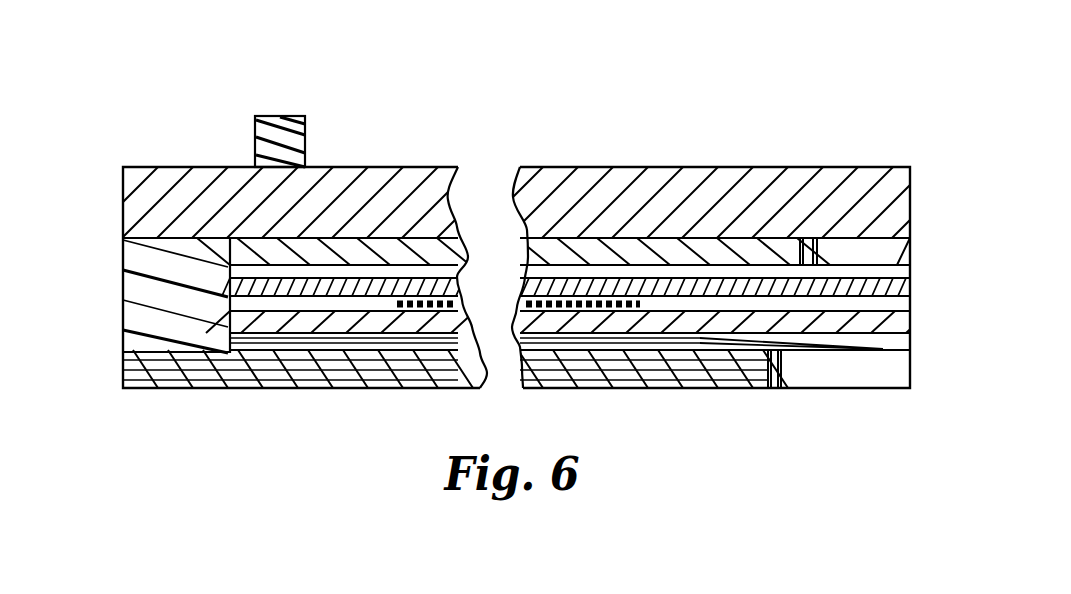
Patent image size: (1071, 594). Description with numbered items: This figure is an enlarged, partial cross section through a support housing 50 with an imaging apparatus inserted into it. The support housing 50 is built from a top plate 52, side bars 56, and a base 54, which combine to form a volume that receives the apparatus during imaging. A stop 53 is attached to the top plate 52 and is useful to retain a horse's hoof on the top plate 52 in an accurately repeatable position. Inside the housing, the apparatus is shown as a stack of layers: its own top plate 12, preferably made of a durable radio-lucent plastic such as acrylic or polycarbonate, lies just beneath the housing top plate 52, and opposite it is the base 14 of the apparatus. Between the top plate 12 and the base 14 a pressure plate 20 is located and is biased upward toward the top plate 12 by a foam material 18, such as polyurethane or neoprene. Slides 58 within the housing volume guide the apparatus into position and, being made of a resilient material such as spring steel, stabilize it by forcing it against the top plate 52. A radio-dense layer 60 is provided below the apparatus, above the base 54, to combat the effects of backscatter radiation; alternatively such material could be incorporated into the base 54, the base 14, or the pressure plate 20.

The support housing 50 is at (762, 76).
The top plate 12 is at (537, 250).
The top plate 52 is at (673, 168).
The stop 53 is at (272, 116).
The side bars 56 is at (137, 283).
The pressure plate 20 is at (318, 290).
The foam material 18 is at (412, 307).
The base 14 is at (253, 322).
The radio-dense layer 60 is at (540, 337).
The slides 58 is at (833, 342).
The base 54 is at (657, 345).